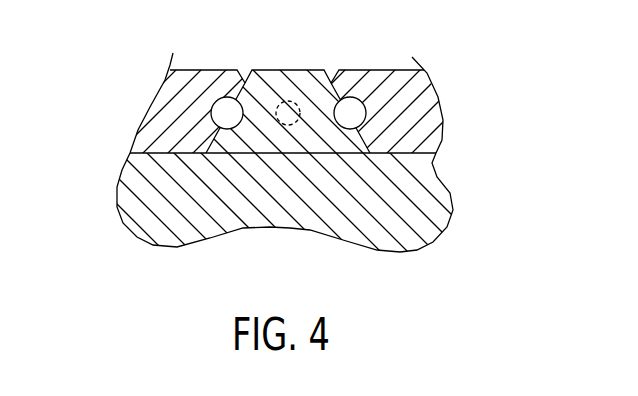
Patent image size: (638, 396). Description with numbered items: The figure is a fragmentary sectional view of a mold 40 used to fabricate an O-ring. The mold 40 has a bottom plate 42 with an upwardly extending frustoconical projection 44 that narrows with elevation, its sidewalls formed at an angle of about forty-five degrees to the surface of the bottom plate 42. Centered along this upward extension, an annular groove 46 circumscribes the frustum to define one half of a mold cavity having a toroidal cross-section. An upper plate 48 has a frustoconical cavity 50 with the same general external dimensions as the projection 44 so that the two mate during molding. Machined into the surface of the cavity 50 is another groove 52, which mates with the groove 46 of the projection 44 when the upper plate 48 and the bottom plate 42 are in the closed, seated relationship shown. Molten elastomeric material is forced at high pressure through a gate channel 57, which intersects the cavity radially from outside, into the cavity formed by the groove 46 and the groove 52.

The mold 40 is at (295, 150).
The bottom plate 42 is at (305, 203).
The frustoconical projection 44 is at (312, 85).
The annular groove 46 is at (358, 126).
The upper plate 48 is at (443, 103).
The frustoconical cavity 50 is at (223, 141).
The groove 52 is at (224, 99).
The gate channel 57 is at (288, 101).